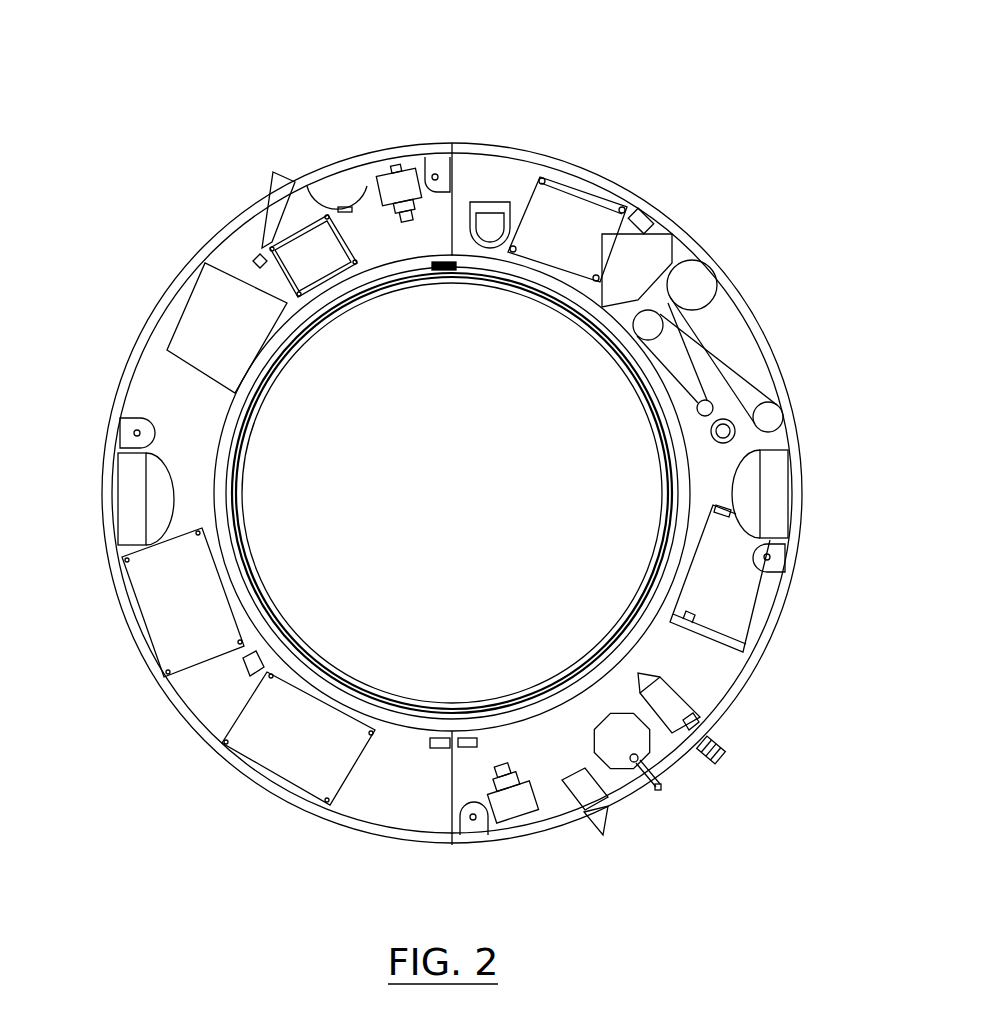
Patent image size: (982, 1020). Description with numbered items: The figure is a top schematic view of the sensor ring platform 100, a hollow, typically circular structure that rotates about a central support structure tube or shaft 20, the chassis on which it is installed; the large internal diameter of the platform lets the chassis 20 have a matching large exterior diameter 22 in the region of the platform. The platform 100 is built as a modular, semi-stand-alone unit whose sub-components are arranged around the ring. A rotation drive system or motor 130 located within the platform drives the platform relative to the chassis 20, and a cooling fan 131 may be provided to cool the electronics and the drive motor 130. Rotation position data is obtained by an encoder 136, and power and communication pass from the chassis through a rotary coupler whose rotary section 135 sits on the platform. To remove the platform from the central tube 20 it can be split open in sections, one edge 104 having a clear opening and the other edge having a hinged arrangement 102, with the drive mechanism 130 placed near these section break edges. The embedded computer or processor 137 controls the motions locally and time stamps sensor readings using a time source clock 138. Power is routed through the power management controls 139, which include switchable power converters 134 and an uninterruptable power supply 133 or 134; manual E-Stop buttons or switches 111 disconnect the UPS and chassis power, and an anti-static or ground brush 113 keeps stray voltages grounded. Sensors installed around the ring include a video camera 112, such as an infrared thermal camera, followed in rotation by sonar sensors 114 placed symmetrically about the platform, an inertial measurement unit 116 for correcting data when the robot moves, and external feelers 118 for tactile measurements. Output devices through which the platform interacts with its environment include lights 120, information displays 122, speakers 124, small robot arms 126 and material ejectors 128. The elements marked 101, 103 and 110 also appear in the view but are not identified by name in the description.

The sensor ring platform 100 is at (430, 72).
The inner wall of housing 101 is at (210, 440).
The hinged arrangement 102 is at (452, 143).
The outer wall of housing 103 is at (133, 347).
The edge having a clear opening 104 is at (447, 787).
The power supply unit 110 is at (127, 508).
The manual E-Stop buttons or switches 111 is at (275, 172).
The video camera 112 is at (403, 187).
The anti-static or ground brush 113 is at (434, 262).
The sonar sensor 114 is at (430, 162).
The inertial measurement unit 116 is at (656, 245).
The external feelers 118 is at (682, 712).
The lights 120 is at (343, 188).
The information displays 122 is at (508, 142).
The speakers 124 is at (243, 245).
The small robot arms 126 is at (725, 330).
The material ejectors 128 is at (628, 742).
The rotation drive system 130 is at (492, 216).
The cooling fan 131 is at (651, 206).
The uninterruptable power supply 133 is at (219, 312).
The power supply 134 is at (320, 247).
The rotary section of rotary coupler 135 is at (438, 744).
The encoder 136 is at (565, 795).
The computer or processor 137 is at (161, 622).
The time source clock 138 is at (248, 672).
The power management controls 139 is at (252, 739).
The central support structure tube or shaft 20 is at (357, 693).
The large diameter 22 is at (400, 721).